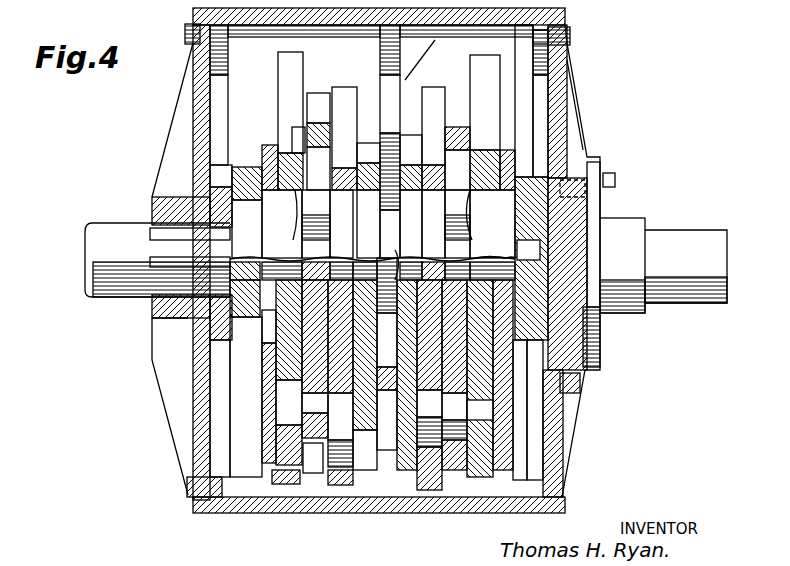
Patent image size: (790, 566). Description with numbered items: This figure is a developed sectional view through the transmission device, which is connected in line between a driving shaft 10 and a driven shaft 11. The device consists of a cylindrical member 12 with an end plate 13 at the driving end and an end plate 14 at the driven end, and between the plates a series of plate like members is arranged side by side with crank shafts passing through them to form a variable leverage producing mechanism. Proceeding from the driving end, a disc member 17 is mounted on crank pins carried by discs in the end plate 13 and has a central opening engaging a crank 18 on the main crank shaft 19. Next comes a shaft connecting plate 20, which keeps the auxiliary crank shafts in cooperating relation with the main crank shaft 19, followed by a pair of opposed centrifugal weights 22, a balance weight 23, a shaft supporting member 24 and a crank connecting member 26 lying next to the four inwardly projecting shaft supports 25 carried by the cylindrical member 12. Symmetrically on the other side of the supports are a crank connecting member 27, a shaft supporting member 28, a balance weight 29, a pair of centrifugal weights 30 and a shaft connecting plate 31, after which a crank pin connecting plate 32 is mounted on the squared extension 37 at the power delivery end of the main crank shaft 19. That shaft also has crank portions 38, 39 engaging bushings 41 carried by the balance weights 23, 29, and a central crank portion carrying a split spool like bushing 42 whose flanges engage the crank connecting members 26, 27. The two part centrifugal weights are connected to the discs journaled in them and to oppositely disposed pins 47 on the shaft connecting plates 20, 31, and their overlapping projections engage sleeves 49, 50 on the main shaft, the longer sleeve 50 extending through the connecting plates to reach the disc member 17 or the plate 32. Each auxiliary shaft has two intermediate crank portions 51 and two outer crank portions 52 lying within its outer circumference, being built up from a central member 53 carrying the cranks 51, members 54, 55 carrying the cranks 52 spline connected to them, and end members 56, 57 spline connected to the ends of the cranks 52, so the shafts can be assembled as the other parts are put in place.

The driving shaft 10 is at (683, 242).
The driven shaft 11 is at (115, 240).
The cylindrical member 12 is at (565, 27).
The end plate 13 is at (575, 102).
The end plate 14 is at (200, 97).
The disc member 17 is at (530, 332).
The crank 18 is at (528, 250).
The main crank shaft 19 is at (495, 248).
The shaft connecting plate 20 is at (513, 415).
The centrifugal weights 22 is at (488, 70).
The balance weight 23 is at (455, 125).
The shaft supporting member 24 is at (433, 115).
The shaft supports 25 is at (408, 85).
The crank connecting member 26 is at (410, 145).
The crank connecting member 27 is at (367, 160).
The shaft supporting member 28 is at (345, 92).
The balance weight 29 is at (314, 122).
The centrifugal weights 30 is at (278, 68).
The shaft connecting plate 31 is at (268, 147).
The crank pin connecting plate 32 is at (245, 168).
The squared extension 37 is at (236, 263).
The crank portion 38 is at (457, 224).
The crank portion 39 is at (316, 224).
The bushings 41 is at (385, 261).
The split spool like bushing 42 is at (387, 237).
The pins 47 is at (290, 432).
The sleeve 49 is at (381, 216).
The sleeve 50 is at (388, 224).
The intermediate crank portions 51 is at (362, 455).
The outer crank portions 52 is at (318, 410).
The central member 53 is at (380, 470).
The member 54 is at (325, 470).
The member 55 is at (462, 470).
The end member 56 is at (290, 398).
The end member 57 is at (511, 324).